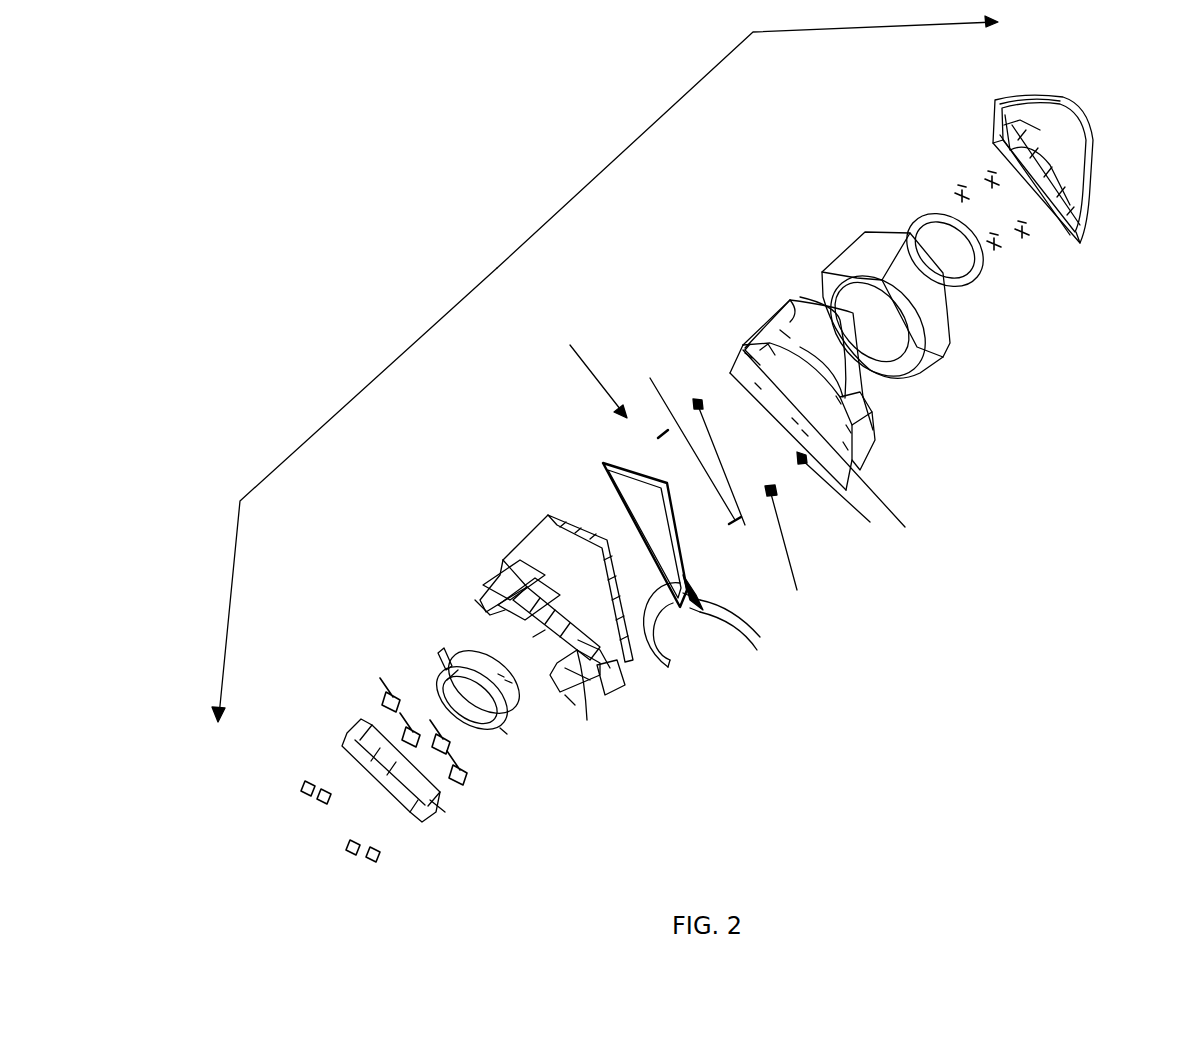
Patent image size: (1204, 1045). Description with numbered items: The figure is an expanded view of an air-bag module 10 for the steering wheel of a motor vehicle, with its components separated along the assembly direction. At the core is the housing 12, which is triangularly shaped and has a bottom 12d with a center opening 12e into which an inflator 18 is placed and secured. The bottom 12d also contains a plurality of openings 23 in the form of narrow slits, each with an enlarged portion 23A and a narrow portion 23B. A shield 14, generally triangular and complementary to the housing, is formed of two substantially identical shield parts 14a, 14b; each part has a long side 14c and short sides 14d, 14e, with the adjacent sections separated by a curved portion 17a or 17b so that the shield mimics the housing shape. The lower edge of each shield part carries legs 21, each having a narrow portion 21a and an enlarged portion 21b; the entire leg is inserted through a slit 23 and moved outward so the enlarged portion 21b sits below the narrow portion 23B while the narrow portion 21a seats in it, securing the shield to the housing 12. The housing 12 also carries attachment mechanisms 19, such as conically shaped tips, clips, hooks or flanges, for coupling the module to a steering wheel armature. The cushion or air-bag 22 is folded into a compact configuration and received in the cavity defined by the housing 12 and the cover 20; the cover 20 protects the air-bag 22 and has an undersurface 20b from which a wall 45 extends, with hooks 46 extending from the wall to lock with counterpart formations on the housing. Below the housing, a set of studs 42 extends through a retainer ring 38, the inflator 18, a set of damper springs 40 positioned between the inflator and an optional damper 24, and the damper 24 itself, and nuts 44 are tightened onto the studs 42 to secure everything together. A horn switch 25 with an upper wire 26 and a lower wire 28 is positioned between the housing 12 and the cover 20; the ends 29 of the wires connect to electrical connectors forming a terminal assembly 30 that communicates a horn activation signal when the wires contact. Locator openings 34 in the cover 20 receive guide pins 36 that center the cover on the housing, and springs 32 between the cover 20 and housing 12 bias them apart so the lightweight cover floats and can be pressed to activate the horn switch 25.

The air-bag module 10 is at (497, 268).
The housing 12 is at (510, 552).
The bottom 12d is at (612, 672).
The center opening 12e is at (577, 655).
The shield 14 is at (850, 420).
The shield part 14a is at (790, 322).
The shield part 14b is at (758, 362).
The long side 14c is at (785, 332).
The short side 14d is at (752, 345).
The short side 14e is at (873, 430).
The curved portion 17a is at (840, 330).
The curved portion 17b is at (840, 457).
The inflator 18 is at (513, 702).
The attachment mechanism 19 is at (480, 608).
The cover 20 is at (1090, 192).
The undersurface 20b is at (1090, 212).
The leg 21 is at (838, 448).
The narrow portion 21a is at (745, 350).
The enlarged portion 21b is at (745, 353).
The air-bag 22 is at (922, 375).
The openings 23 is at (612, 682).
The enlarged portion 23A is at (553, 585).
The narrow portion 23B is at (553, 585).
The damper 24 is at (437, 805).
The horn switch 25 is at (584, 367).
The upper wire 26 is at (690, 560).
The lower wire 28 is at (620, 520).
The ends 29 is at (670, 660).
The terminal assembly 30 is at (757, 650).
The springs 32 is at (800, 546).
The locator openings 34 is at (788, 481).
The guide pin 36 is at (663, 433).
The retainer ring 38 is at (968, 292).
The damper springs 40 is at (440, 735).
The studs 42 is at (994, 244).
The nuts 44 is at (373, 845).
The wall 45 is at (1027, 100).
The hooks 46 is at (993, 135).